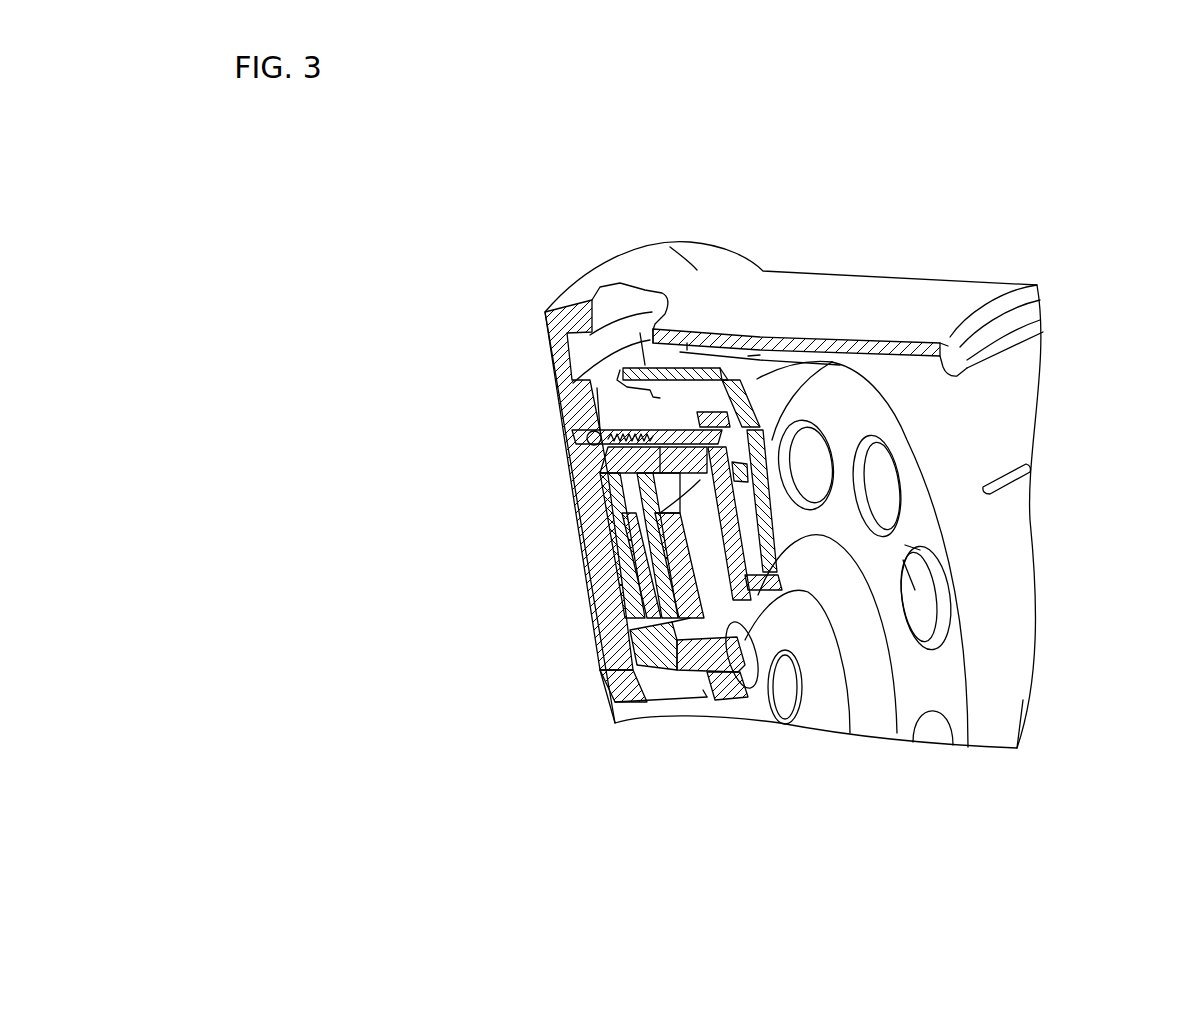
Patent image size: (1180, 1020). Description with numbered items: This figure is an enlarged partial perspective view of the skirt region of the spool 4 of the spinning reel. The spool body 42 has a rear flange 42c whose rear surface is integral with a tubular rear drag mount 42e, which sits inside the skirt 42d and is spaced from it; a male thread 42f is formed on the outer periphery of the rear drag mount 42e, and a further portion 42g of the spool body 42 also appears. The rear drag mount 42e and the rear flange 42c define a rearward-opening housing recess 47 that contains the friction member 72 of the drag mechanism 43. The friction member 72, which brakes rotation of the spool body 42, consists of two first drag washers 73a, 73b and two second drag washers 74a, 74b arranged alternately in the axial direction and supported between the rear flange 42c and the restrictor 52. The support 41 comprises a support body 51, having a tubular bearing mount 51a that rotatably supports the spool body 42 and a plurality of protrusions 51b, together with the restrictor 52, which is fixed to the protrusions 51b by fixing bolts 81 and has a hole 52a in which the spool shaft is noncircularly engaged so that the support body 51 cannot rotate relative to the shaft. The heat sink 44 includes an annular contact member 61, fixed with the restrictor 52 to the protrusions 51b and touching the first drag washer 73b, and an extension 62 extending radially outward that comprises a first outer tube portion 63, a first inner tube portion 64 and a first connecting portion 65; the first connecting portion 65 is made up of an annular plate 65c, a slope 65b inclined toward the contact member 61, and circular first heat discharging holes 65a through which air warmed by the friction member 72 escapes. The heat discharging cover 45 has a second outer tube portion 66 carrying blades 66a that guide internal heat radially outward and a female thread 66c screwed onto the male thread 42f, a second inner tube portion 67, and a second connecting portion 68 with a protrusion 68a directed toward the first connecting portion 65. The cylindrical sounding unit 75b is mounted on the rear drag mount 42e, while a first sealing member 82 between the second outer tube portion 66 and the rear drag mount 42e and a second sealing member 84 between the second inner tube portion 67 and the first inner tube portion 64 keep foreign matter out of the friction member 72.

The motor unit 4 is at (1058, 220).
The support 41 is at (632, 700).
The spool body 42 is at (872, 228).
The rear flange 42c is at (567, 430).
The skirt 42d is at (947, 292).
The rear drag mount 42e is at (622, 460).
The male thread 42f is at (640, 405).
The cover notch 42g is at (618, 296).
The drag mechanism 43 is at (607, 537).
The heat sink 44 is at (973, 695).
The heat discharging cover 45 is at (743, 528).
The housing recess 47 is at (700, 478).
The support body 51 is at (581, 676).
The bearing mount 51a is at (640, 690).
The protrusions 51b is at (640, 645).
The restrictor 52 is at (748, 707).
The hole 52a is at (760, 713).
The contact member 61 is at (807, 687).
The extension 62 is at (1023, 400).
The first outer tube portion 63 is at (760, 355).
The first inner tube portion 64 is at (777, 580).
The first connecting portion 65 is at (994, 582).
The first heat discharging holes 65a is at (942, 600).
The slope 65b is at (815, 585).
The annular plate 65c is at (850, 541).
The second outer tube portion 66 is at (667, 403).
The blades 66a is at (641, 333).
The female thread 66c is at (728, 380).
The second inner tube portion 67 is at (660, 625).
The second connecting portion 68 is at (790, 486).
The protrusion 68a is at (927, 443).
The friction member 72 is at (553, 555).
The first drag washer 73a is at (645, 568).
The first drag washer 73b is at (690, 610).
The second drag washer 74a is at (613, 553).
The second drag washer 74b is at (652, 590).
The sounding unit 75b is at (838, 362).
The fixing bolts 81 is at (703, 690).
The first sealing member 82 is at (580, 428).
The second sealing member 84 is at (800, 675).